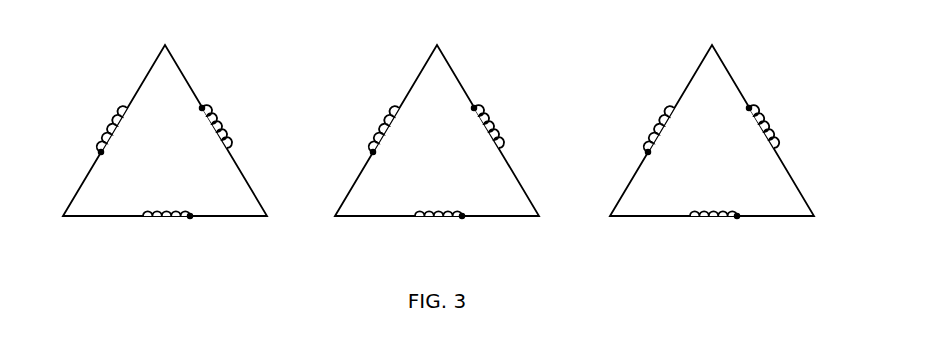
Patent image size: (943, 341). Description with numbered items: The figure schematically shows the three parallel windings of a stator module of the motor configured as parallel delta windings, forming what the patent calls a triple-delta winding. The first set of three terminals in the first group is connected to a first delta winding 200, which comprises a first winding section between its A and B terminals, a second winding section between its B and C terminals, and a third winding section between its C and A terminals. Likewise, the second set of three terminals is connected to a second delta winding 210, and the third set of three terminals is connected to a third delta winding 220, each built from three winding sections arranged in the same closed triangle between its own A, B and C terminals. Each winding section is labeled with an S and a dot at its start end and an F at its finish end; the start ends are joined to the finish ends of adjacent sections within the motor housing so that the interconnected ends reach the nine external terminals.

The first delta winding 200 is at (220, 69).
The second delta winding 210 is at (492, 69).
The third delta winding 220 is at (767, 69).